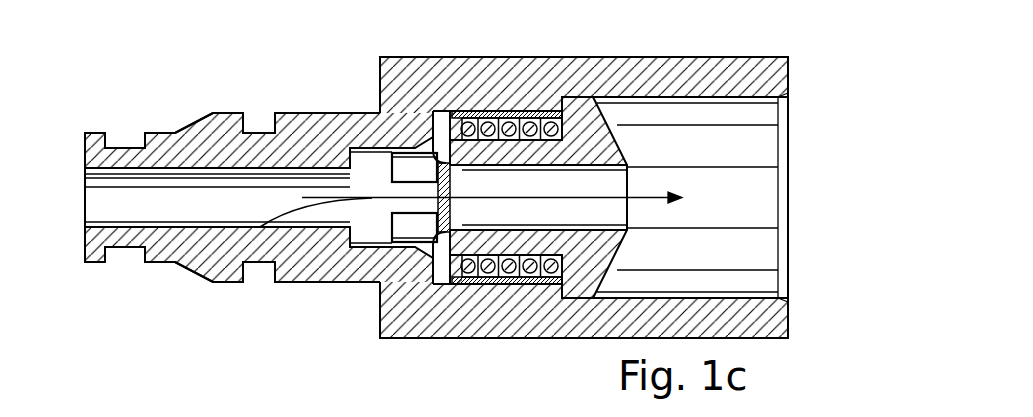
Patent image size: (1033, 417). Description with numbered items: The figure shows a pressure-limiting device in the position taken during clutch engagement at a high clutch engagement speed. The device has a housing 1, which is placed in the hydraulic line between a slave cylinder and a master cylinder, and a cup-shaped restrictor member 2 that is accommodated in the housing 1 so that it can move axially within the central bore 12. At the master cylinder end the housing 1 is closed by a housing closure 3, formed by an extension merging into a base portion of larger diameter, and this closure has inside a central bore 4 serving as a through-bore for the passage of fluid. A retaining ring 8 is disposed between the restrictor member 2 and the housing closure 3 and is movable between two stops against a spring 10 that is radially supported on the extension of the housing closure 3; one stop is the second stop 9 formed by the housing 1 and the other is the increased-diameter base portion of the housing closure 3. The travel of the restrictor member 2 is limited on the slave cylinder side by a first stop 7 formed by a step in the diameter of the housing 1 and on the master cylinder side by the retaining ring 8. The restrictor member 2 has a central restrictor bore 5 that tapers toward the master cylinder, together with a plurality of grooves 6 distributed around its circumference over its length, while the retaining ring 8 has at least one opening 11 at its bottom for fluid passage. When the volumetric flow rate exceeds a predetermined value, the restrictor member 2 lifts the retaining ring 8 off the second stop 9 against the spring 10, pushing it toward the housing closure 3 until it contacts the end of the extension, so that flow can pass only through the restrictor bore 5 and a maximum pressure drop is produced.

The housing 1 is at (338, 123).
The restrictor member 2 is at (408, 236).
The housing closure 3 is at (586, 112).
The central bore 4 is at (615, 222).
The restrictor bore 5 is at (427, 200).
The grooves 6 is at (398, 151).
The first stop 7 is at (393, 243).
The retaining ring 8 is at (475, 113).
The second stop 9 is at (440, 250).
The spring 10 is at (535, 118).
The opening 11 is at (472, 262).
The central bore 12 is at (223, 282).